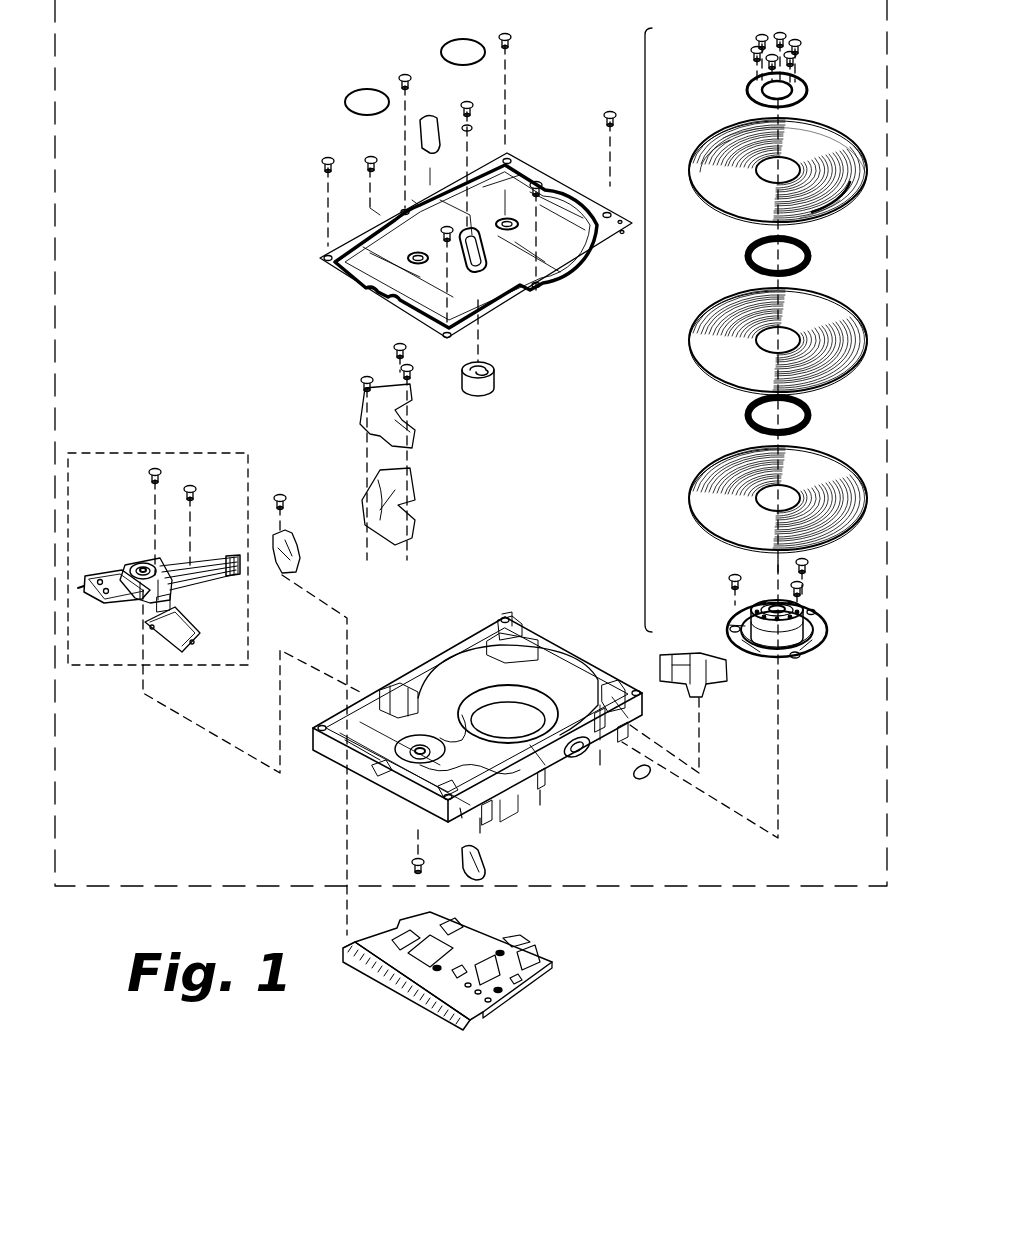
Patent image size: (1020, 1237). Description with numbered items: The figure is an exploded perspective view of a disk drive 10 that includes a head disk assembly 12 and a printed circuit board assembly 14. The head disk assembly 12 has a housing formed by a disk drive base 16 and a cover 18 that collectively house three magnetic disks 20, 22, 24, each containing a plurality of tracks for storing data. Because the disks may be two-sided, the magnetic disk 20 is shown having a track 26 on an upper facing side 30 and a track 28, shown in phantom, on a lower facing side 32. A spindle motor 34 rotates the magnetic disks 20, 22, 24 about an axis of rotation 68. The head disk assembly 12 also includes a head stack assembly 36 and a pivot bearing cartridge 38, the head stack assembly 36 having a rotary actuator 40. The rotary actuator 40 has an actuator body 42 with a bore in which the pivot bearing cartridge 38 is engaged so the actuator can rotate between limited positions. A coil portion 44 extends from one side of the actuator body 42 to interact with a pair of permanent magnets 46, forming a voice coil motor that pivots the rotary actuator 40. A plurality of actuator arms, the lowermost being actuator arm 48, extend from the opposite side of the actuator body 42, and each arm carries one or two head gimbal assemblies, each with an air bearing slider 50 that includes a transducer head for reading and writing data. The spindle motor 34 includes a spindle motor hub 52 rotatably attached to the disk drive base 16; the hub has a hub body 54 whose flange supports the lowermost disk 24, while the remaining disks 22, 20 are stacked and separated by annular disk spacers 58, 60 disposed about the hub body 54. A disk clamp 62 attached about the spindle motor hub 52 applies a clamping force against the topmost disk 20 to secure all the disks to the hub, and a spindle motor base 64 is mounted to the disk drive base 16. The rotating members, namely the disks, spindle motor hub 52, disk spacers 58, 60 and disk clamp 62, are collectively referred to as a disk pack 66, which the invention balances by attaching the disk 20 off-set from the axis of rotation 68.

The disk drive 10 is at (730, 908).
The head disk assembly 12 is at (625, 888).
The printed circuit board assembly 14 is at (496, 1004).
The disk drive base 16 is at (520, 795).
The cover 18 is at (598, 247).
The magnetic disk 20 is at (713, 145).
The magnetic disk 22 is at (714, 302).
The magnetic disk 24 is at (713, 463).
The track 26 is at (832, 206).
The track 28 is at (700, 185).
The upper facing side 30 is at (821, 116).
The lower facing side 32 is at (822, 228).
The spindle motor 34 is at (760, 630).
The head stack assembly 36 is at (158, 539).
The pivot bearing cartridge 38 is at (147, 562).
The rotary actuator 40 is at (130, 558).
The actuator body 42 is at (128, 568).
The coil portion 44 is at (95, 598).
The permanent magnets 46 is at (410, 486).
The actuator arm 48 is at (190, 588).
The air bearing slider 50 is at (233, 553).
The spindle motor hub 52 is at (780, 640).
The hub body 54 is at (750, 633).
The annular disk spacer 58 is at (748, 254).
The annular disk spacer 60 is at (748, 414).
The disk clamp 62 is at (760, 82).
The spindle motor base 64 is at (816, 620).
The disk pack 66 is at (645, 334).
The axis of rotation 68 is at (778, 568).